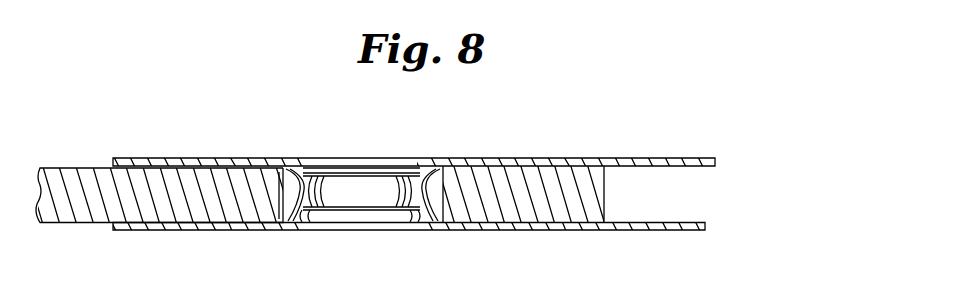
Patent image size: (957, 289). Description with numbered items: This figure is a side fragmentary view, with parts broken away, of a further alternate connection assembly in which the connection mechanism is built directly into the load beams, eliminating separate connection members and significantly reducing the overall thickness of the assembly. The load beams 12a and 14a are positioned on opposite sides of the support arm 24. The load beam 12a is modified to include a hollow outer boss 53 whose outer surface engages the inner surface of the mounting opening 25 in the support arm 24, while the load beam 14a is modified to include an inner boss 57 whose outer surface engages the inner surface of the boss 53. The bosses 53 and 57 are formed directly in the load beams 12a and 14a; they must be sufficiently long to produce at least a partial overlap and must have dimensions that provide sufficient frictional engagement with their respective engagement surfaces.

The support arm 24 is at (78, 168).
The mounting opening 25 is at (287, 214).
The hollow outer boss 53 is at (438, 189).
The inner boss 57 is at (297, 197).
The load beam 12a is at (664, 158).
The load beam 14a is at (618, 230).